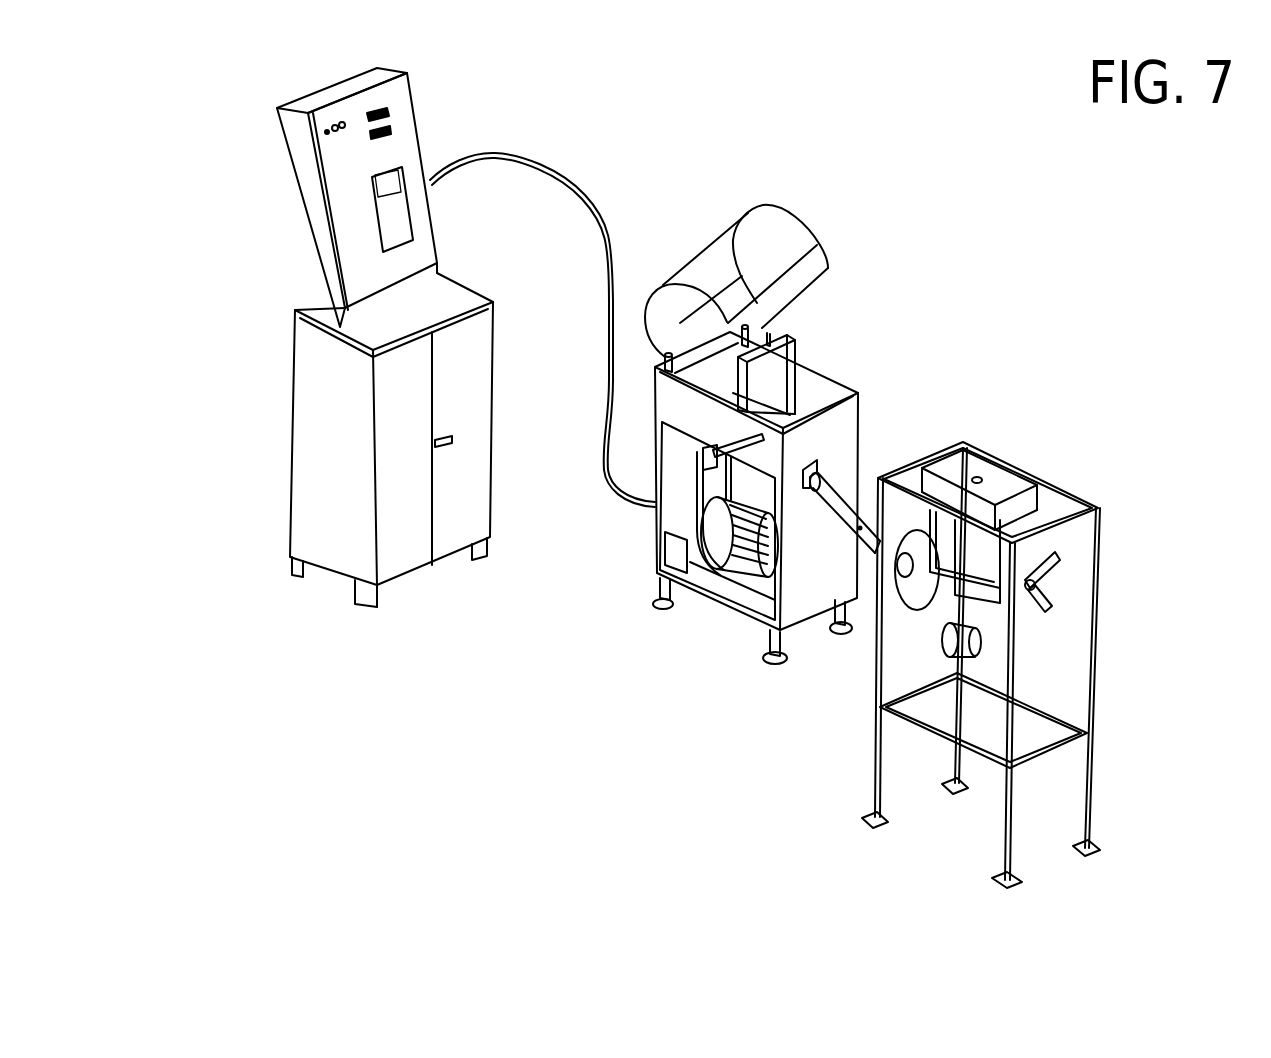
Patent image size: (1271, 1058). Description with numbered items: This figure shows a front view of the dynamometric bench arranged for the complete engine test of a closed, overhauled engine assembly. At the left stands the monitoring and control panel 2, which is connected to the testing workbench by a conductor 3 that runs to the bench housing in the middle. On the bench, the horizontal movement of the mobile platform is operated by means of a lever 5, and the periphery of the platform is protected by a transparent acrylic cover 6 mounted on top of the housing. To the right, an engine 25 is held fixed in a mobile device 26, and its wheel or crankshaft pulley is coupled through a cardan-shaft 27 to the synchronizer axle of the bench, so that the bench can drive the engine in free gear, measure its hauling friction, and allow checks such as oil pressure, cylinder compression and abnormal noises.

The monitoring and control panel 2 is at (323, 245).
The conductor 3 is at (607, 413).
The lever 5 is at (755, 438).
The transparent acrylic cover 6 is at (727, 270).
The engine 25 is at (1000, 487).
The mobile device 26 is at (1100, 640).
The cardan-shaft 27 is at (840, 503).